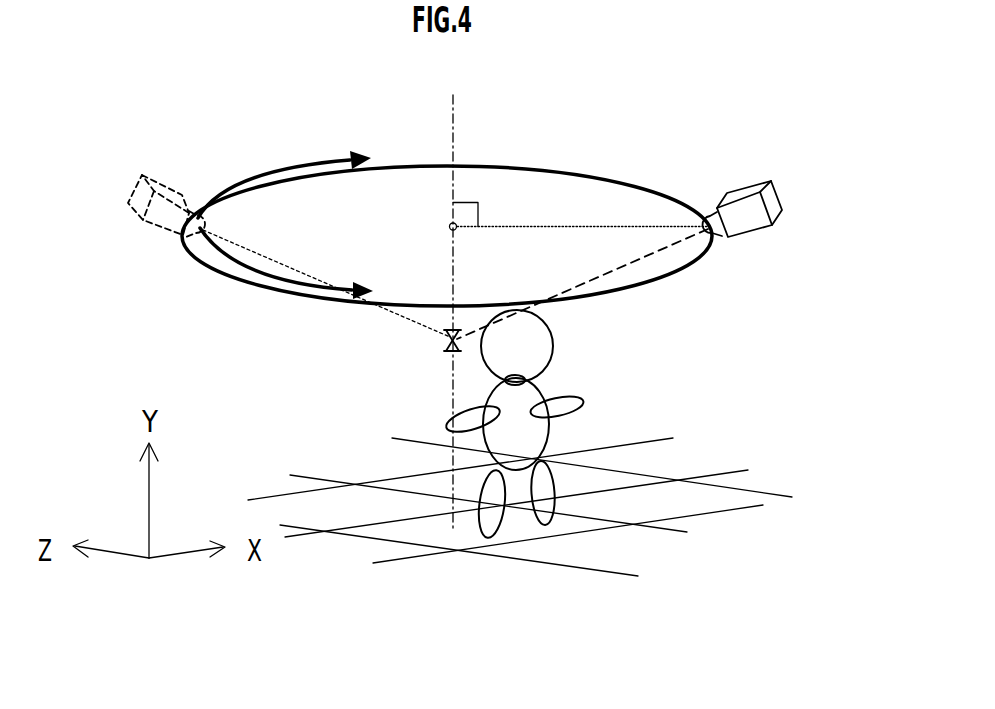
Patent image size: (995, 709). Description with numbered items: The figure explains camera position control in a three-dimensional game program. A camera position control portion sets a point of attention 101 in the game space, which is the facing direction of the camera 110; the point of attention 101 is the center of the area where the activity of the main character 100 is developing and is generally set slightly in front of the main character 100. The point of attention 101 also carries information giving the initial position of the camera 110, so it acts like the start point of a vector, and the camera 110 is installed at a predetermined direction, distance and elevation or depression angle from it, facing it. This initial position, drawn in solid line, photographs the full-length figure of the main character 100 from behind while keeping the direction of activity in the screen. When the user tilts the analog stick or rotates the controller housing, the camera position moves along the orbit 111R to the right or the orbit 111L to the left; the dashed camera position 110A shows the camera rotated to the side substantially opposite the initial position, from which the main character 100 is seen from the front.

The main character 100 is at (478, 545).
The point of attention 101 is at (447, 347).
The camera 110 is at (767, 190).
The rotated camera position 110A is at (140, 180).
The leftward orbit 111L is at (307, 163).
The rightward orbit 111R is at (613, 181).